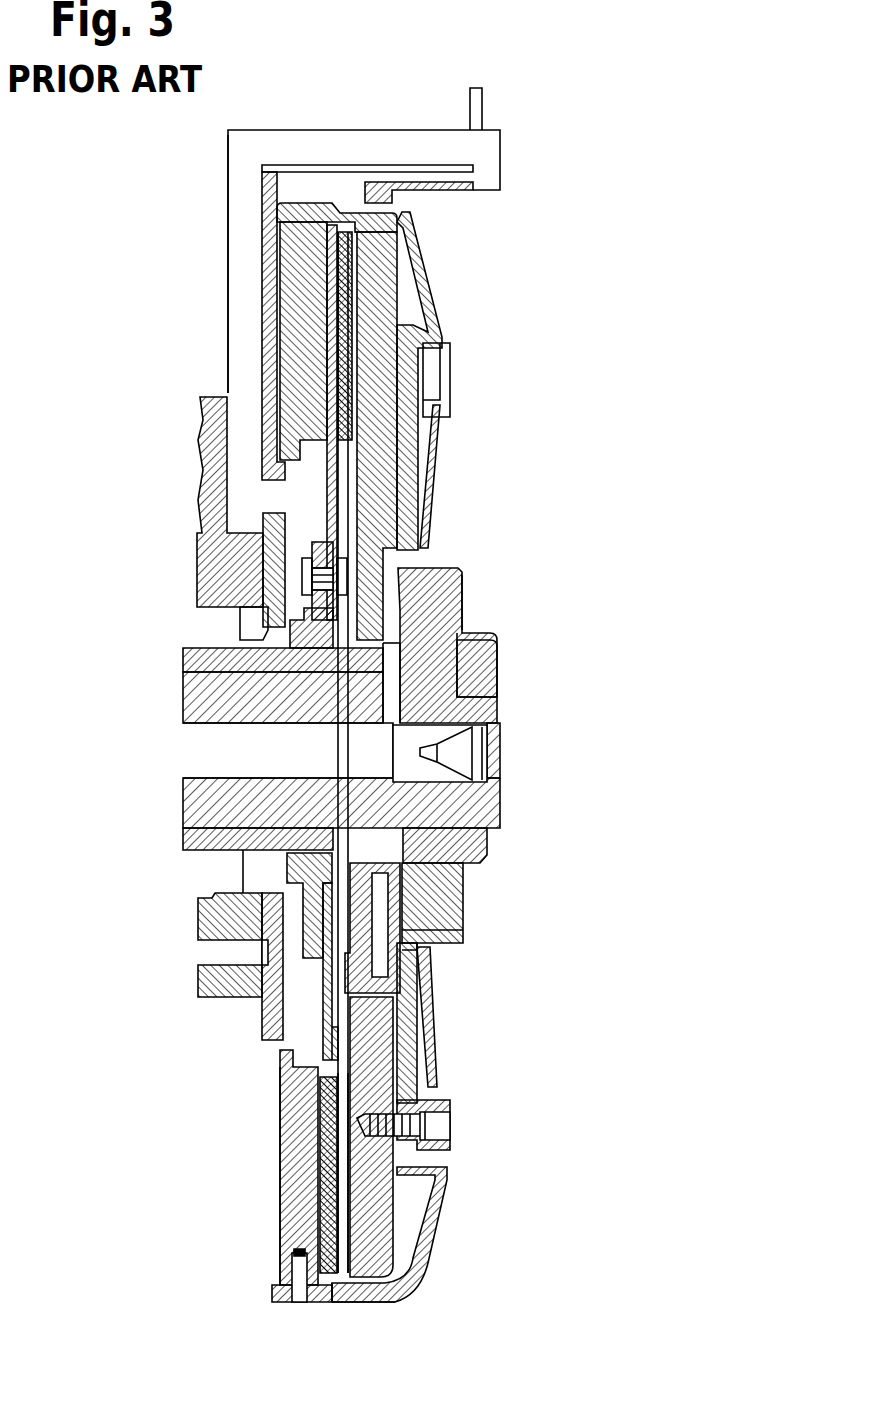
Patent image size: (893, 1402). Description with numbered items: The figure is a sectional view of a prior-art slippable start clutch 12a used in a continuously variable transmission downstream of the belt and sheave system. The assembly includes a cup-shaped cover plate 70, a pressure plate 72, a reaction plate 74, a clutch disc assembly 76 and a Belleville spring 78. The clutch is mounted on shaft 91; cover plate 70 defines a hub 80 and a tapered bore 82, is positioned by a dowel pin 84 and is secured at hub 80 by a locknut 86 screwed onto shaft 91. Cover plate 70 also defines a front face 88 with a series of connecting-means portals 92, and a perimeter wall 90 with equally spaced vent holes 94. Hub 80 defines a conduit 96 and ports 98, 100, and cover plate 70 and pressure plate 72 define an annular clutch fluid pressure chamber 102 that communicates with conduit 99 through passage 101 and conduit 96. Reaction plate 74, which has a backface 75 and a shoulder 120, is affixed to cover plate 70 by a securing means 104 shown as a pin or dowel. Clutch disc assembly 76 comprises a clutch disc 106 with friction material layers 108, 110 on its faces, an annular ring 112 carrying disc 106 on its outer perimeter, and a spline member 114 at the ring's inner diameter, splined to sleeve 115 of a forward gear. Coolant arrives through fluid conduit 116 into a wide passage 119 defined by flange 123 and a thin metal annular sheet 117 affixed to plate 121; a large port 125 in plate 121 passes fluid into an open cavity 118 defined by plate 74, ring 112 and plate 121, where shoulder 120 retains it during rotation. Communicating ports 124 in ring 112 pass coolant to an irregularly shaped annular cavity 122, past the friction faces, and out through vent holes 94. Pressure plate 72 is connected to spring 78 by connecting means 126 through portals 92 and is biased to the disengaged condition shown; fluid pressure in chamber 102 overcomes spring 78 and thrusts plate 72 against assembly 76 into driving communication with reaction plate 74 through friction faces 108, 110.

The start clutch 12a is at (615, 290).
The cover plate 70 is at (432, 1253).
The pressure plate 72 is at (397, 1302).
The reaction plate 74 is at (280, 1178).
The backface 75 is at (280, 1125).
The clutch disc assembly 76 is at (325, 1031).
The Belleville spring 78 is at (435, 1012).
The hub 80 is at (445, 562).
The tapered bore 82 is at (458, 885).
The dowel pin 84 is at (467, 880).
The locknut 86 is at (400, 662).
The front face 88 is at (436, 295).
The perimeter wall 90 is at (335, 1305).
The shaft 91 is at (183, 812).
The connecting-means portals 92 is at (417, 1083).
The vent holes 94 is at (392, 203).
The conduit 96 is at (390, 703).
The port 98 is at (400, 623).
The conduit 99 is at (274, 763).
The port 100 is at (380, 668).
The passage 101 is at (403, 697).
The annular clutch fluid pressure chamber 102 is at (407, 623).
The securing means 104 is at (295, 1305).
The clutch disc 106 is at (355, 1303).
The friction material layer 108 is at (320, 1223).
The friction material layer 110 is at (378, 1305).
The annular ring 112 is at (323, 1022).
The spline member 114 is at (287, 866).
The sleeve 115 is at (190, 848).
The fluid conduit 116 is at (415, 128).
The thin metal annular sheet 117 is at (262, 210).
The open cavity 118 is at (300, 494).
The wide passage 119 is at (240, 393).
The shoulder 120 is at (290, 492).
The plate 121 is at (243, 636).
The annular cavity 122 is at (463, 927).
The flange 123 is at (200, 533).
The communicating ports 124 is at (327, 503).
The large port 125 is at (355, 500).
The connecting means 126 is at (450, 1125).